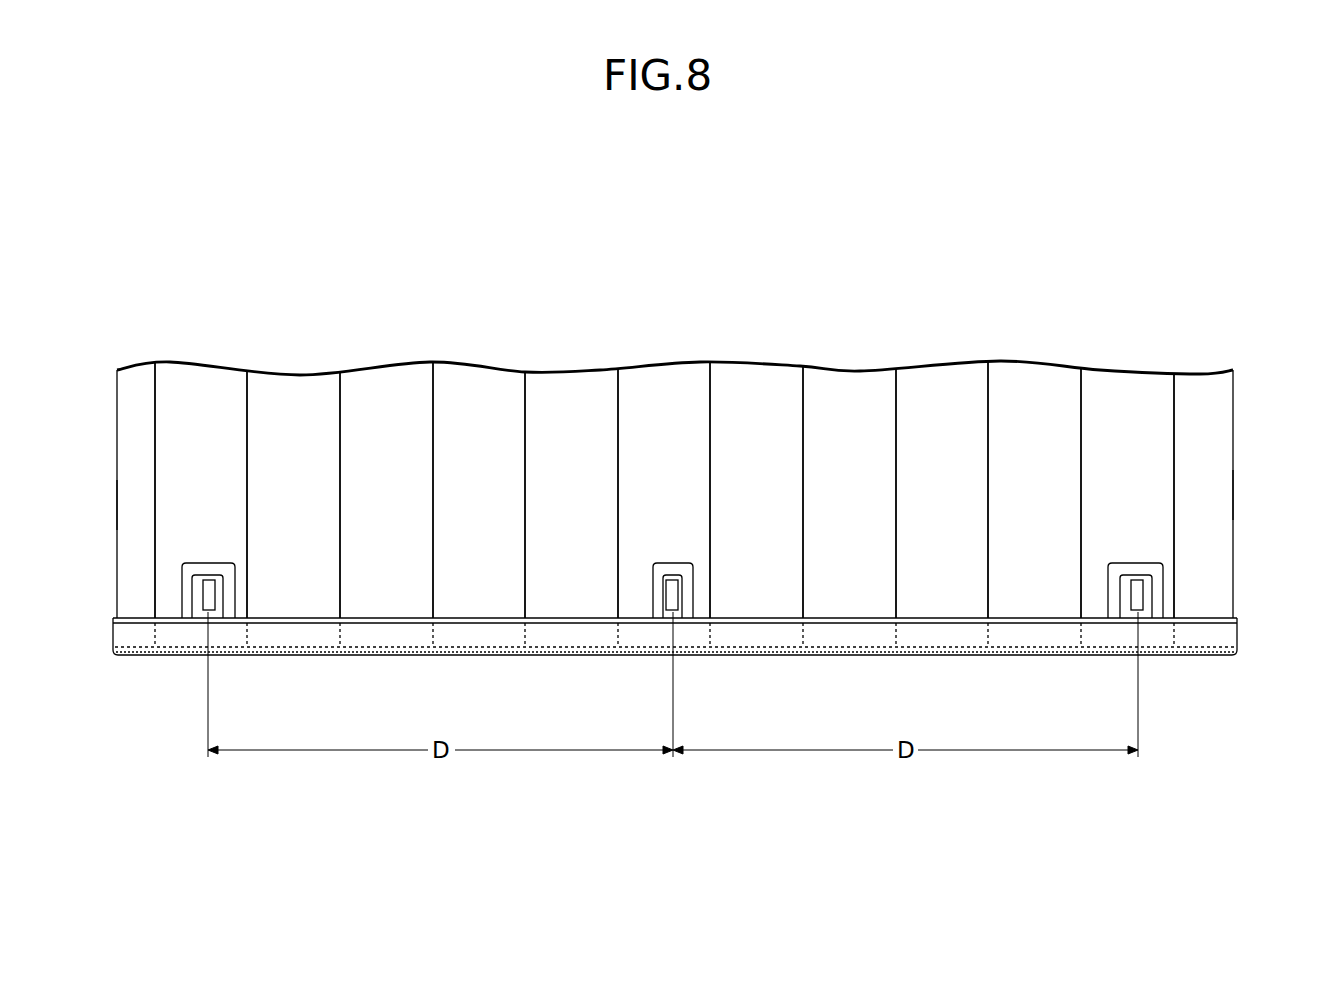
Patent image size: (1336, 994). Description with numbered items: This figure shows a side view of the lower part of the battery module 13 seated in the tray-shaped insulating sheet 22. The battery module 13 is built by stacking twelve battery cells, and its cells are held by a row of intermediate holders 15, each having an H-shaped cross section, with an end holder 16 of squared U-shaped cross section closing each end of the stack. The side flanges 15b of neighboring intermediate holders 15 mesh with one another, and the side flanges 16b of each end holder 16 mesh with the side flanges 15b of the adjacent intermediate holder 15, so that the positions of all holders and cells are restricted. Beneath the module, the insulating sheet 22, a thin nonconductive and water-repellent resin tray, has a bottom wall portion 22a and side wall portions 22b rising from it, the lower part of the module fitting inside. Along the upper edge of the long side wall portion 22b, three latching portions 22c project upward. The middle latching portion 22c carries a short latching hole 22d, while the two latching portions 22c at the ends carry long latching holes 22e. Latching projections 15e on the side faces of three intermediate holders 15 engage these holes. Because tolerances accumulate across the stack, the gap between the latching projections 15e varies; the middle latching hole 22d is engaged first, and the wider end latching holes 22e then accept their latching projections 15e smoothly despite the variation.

The battery module 13 is at (937, 318).
The intermediate holder 15 is at (375, 390).
The side flange 15b is at (573, 390).
The latching projection 15e is at (209, 594).
The end holder 16 is at (117, 415).
The side flange 16b is at (125, 502).
The insulating sheet 22 is at (175, 657).
The bottom wall portion 22a is at (393, 655).
The side wall portion 22b is at (854, 635).
The latching portion 22c is at (183, 588).
The latching hole 22d is at (663, 587).
The latching hole 22e is at (215, 583).